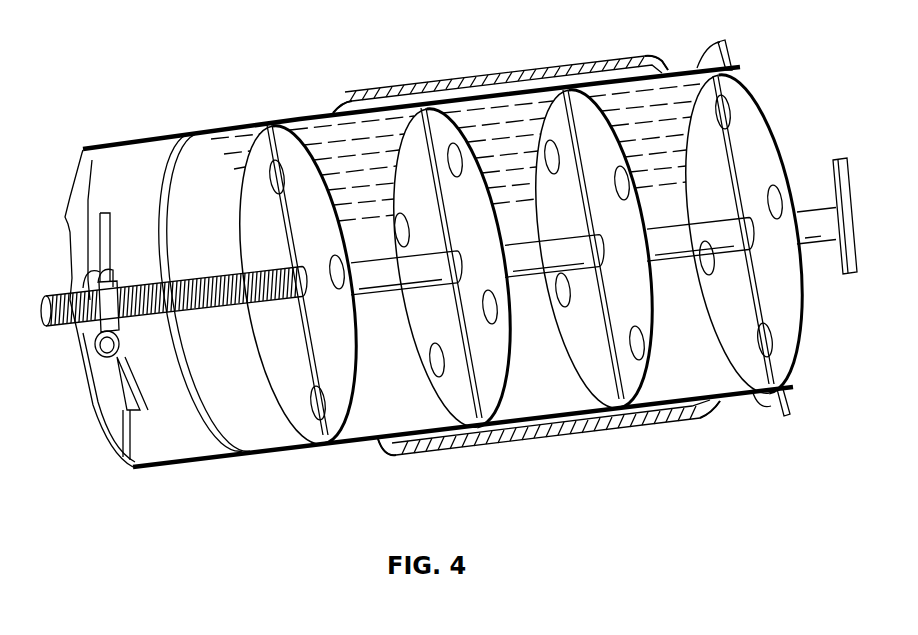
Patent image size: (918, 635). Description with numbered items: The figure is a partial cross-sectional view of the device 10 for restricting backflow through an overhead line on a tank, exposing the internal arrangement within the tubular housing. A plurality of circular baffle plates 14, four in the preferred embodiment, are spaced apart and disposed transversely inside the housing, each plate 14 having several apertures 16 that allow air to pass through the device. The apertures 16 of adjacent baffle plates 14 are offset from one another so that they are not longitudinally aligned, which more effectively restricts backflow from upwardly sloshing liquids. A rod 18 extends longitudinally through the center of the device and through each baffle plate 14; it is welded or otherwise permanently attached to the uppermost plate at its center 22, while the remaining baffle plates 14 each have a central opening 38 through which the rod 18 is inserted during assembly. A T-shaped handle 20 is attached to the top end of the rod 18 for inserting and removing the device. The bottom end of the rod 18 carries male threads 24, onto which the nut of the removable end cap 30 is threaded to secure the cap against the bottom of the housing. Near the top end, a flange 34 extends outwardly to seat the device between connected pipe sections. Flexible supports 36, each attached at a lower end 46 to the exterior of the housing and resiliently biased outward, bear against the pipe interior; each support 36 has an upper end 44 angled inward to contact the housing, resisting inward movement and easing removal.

The device 10 is at (111, 62).
The baffle plate 14 is at (290, 140).
The aperture 16 is at (451, 160).
The rod 18 is at (690, 224).
The handle 20 is at (852, 168).
The center 22 is at (750, 220).
The male threads 24 is at (53, 296).
The end cap 30 is at (84, 332).
The flange 34 is at (781, 418).
The flexible support 36 is at (500, 74).
The central opening 38 is at (294, 252).
The upper end 44 is at (668, 66).
The lower end 46 is at (337, 101).